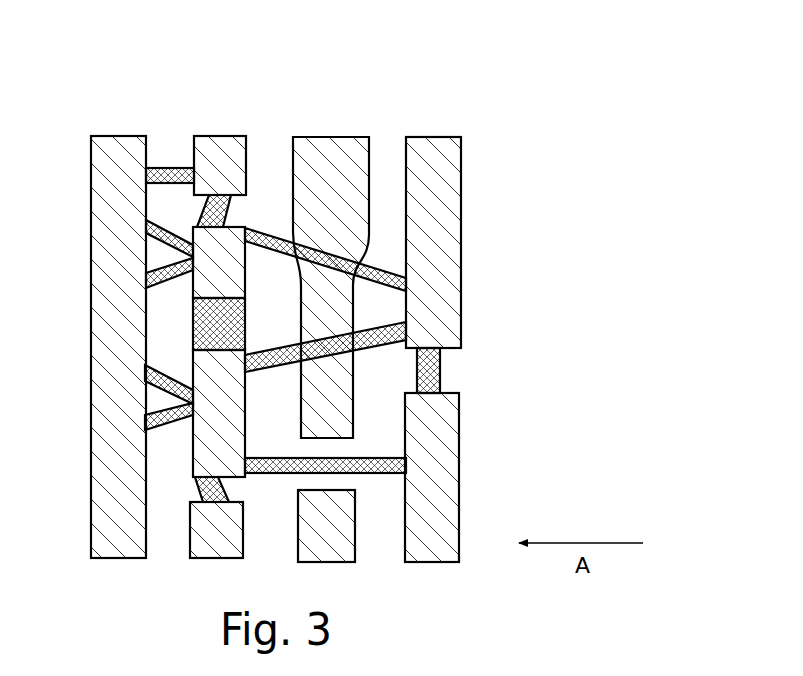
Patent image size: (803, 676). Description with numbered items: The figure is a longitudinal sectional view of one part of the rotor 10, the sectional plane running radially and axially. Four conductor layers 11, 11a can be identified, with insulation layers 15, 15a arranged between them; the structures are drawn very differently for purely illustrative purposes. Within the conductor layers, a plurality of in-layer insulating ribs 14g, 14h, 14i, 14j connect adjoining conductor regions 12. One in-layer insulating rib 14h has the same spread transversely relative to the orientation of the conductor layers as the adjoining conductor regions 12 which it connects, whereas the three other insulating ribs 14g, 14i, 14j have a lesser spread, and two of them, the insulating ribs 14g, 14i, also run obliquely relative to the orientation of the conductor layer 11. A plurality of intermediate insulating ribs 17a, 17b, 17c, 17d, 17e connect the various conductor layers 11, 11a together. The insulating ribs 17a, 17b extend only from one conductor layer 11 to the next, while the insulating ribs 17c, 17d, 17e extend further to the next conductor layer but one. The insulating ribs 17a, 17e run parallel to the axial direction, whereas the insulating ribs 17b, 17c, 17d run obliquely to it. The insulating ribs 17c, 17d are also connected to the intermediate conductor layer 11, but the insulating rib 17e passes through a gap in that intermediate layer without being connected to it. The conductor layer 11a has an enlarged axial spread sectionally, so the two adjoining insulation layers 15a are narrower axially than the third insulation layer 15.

The rotor 10 is at (494, 98).
The conductor layer 11 is at (112, 127).
The conductor layer 11a is at (330, 127).
The conductor region 12 is at (452, 171).
The insulation layer 15 is at (178, 156).
The insulation layer 15a is at (272, 127).
The intermediate insulating rib 17a is at (166, 168).
The intermediate insulating rib 17b is at (147, 290).
The intermediate insulating rib 17c is at (386, 272).
The intermediate insulating rib 17d is at (386, 320).
The intermediate insulating rib 17e is at (378, 458).
The in-layer insulating rib 14g is at (207, 206).
The in-layer insulating rib 14h is at (200, 326).
The in-layer insulating rib 14i is at (193, 482).
The in-layer insulating rib 14j is at (442, 358).